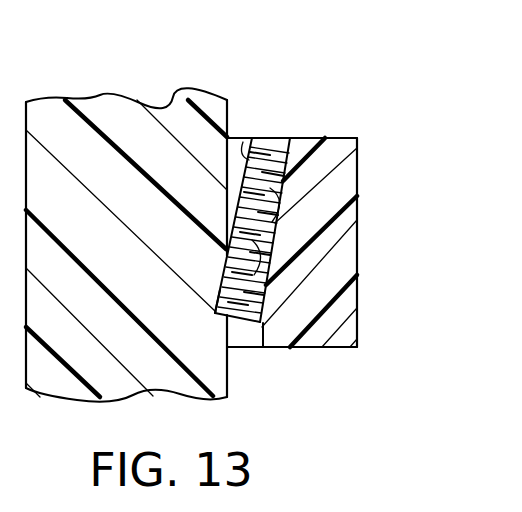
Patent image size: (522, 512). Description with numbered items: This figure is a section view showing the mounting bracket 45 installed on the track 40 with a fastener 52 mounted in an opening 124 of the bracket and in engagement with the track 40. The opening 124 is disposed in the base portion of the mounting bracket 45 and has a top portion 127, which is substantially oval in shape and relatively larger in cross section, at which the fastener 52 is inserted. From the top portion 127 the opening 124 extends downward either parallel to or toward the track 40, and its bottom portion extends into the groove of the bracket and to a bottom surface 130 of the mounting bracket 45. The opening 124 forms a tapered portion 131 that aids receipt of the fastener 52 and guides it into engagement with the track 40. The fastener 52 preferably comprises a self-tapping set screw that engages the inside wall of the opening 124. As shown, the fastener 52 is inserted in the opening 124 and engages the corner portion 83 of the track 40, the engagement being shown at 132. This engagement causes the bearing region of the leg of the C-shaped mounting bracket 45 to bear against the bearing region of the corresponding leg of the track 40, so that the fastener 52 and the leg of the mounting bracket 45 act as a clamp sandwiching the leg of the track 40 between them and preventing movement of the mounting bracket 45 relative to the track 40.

The track 40 is at (229, 106).
The mounting bracket 45 is at (360, 326).
The fastener 52 is at (239, 148).
The top portion 127 is at (282, 141).
The opening 124 is at (292, 167).
The tapered portion 131 is at (273, 238).
The engagement 132 is at (217, 290).
The corner portion 83 is at (229, 379).
The bottom surface 130 is at (299, 347).